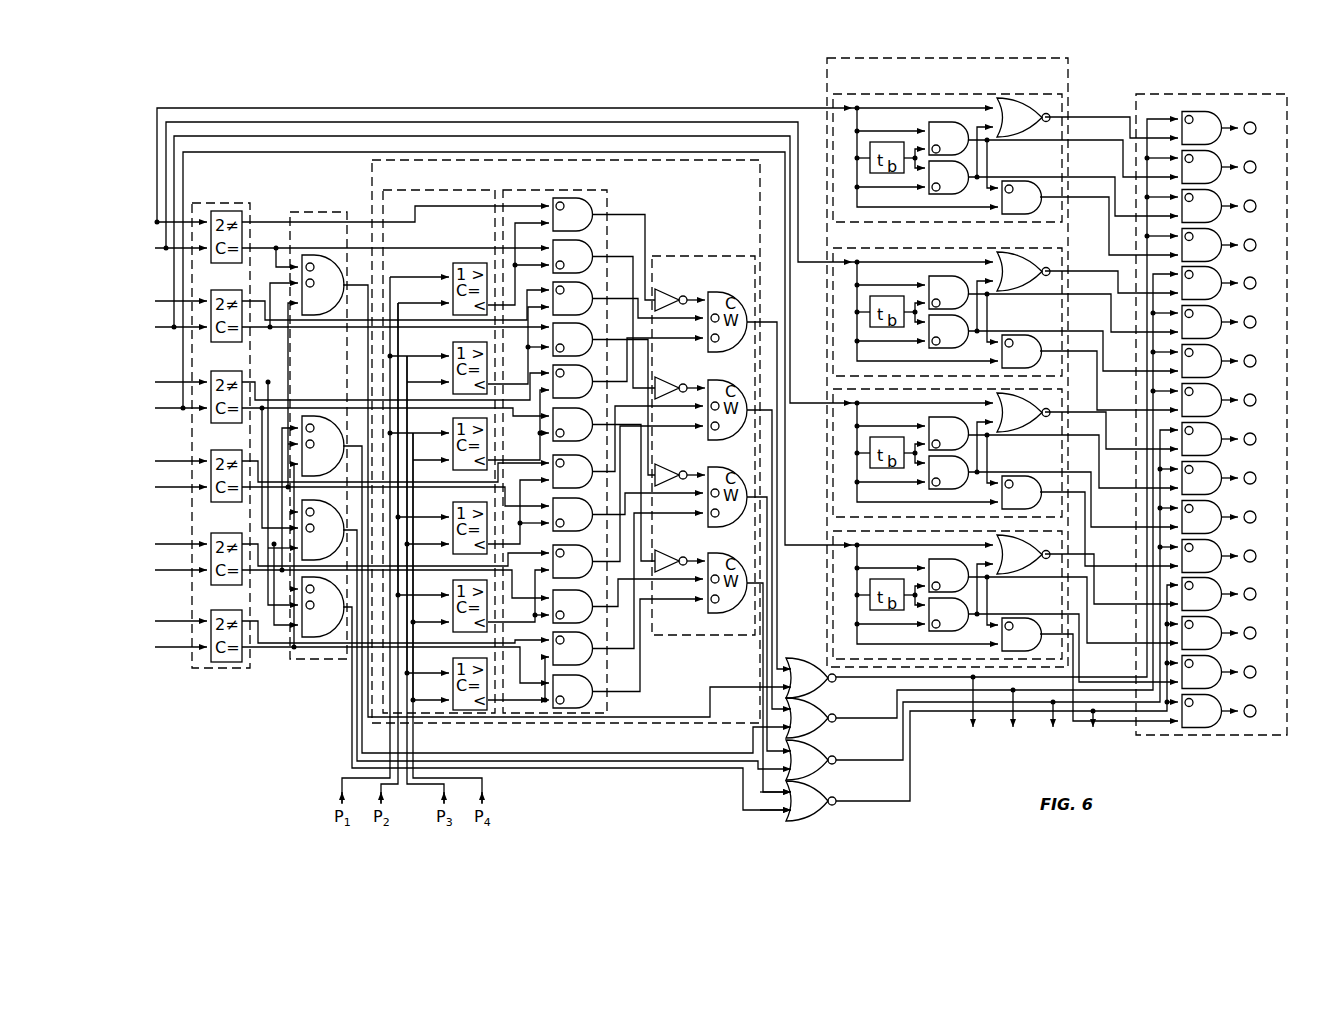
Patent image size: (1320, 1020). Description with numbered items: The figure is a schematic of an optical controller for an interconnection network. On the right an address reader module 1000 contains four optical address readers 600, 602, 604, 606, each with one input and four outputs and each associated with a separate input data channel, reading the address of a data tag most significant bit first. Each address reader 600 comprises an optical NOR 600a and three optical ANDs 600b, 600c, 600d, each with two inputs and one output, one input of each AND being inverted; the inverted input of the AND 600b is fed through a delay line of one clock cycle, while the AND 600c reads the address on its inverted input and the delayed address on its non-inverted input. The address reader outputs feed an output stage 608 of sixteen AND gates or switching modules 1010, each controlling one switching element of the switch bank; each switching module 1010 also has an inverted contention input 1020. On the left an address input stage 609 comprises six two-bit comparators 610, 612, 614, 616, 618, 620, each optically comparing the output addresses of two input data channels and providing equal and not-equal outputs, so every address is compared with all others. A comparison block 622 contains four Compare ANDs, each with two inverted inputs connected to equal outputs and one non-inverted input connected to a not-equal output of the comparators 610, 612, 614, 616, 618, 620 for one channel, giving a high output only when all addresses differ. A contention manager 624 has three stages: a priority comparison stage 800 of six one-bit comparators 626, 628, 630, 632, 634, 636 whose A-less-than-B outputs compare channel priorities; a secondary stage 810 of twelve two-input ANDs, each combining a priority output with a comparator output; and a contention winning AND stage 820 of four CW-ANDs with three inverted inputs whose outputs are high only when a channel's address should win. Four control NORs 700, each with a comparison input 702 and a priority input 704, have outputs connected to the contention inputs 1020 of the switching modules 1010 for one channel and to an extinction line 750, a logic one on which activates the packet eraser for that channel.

The address input stage 609 is at (220, 206).
The 2-bit comparator 610 is at (211, 214).
The 2-bit comparator 612 is at (211, 294).
The 2-bit comparator 614 is at (211, 373).
The 2-bit comparator 616 is at (211, 453).
The 2-bit comparator 618 is at (211, 536).
The 2-bit comparator 620 is at (211, 613).
The comparison block 622 is at (314, 215).
The contention manager 624 is at (600, 724).
The 1-bit comparator 626 is at (453, 270).
The 1-bit comparator 628 is at (453, 349).
The 1-bit comparator 630 is at (453, 426).
The 1-bit comparator 632 is at (453, 509).
The 1-bit comparator 634 is at (453, 588).
The 1-bit comparator 636 is at (453, 666).
The priority comparison stage 800 is at (464, 196).
The secondary stage 810 is at (556, 196).
The contention winning AND stage 820 is at (688, 256).
The control NOR 700 is at (838, 683).
The comparison input 702 is at (765, 810).
The priority input 704 is at (762, 794).
The extinction line 750 is at (1118, 744).
The address reader module 1000 is at (1068, 72).
The optical address reader 600 is at (962, 154).
The optical NOR 600a is at (1005, 98).
The optical AND 600b is at (945, 122).
The optical AND 600c is at (955, 194).
The optical AND 600d is at (1022, 212).
The optical address reader 602 is at (1062, 253).
The optical address reader 604 is at (1062, 395).
The optical address reader 606 is at (1062, 538).
The output stage 608 is at (1217, 439).
The switching module 1010 is at (1206, 170).
The contention input 1020 is at (1190, 703).